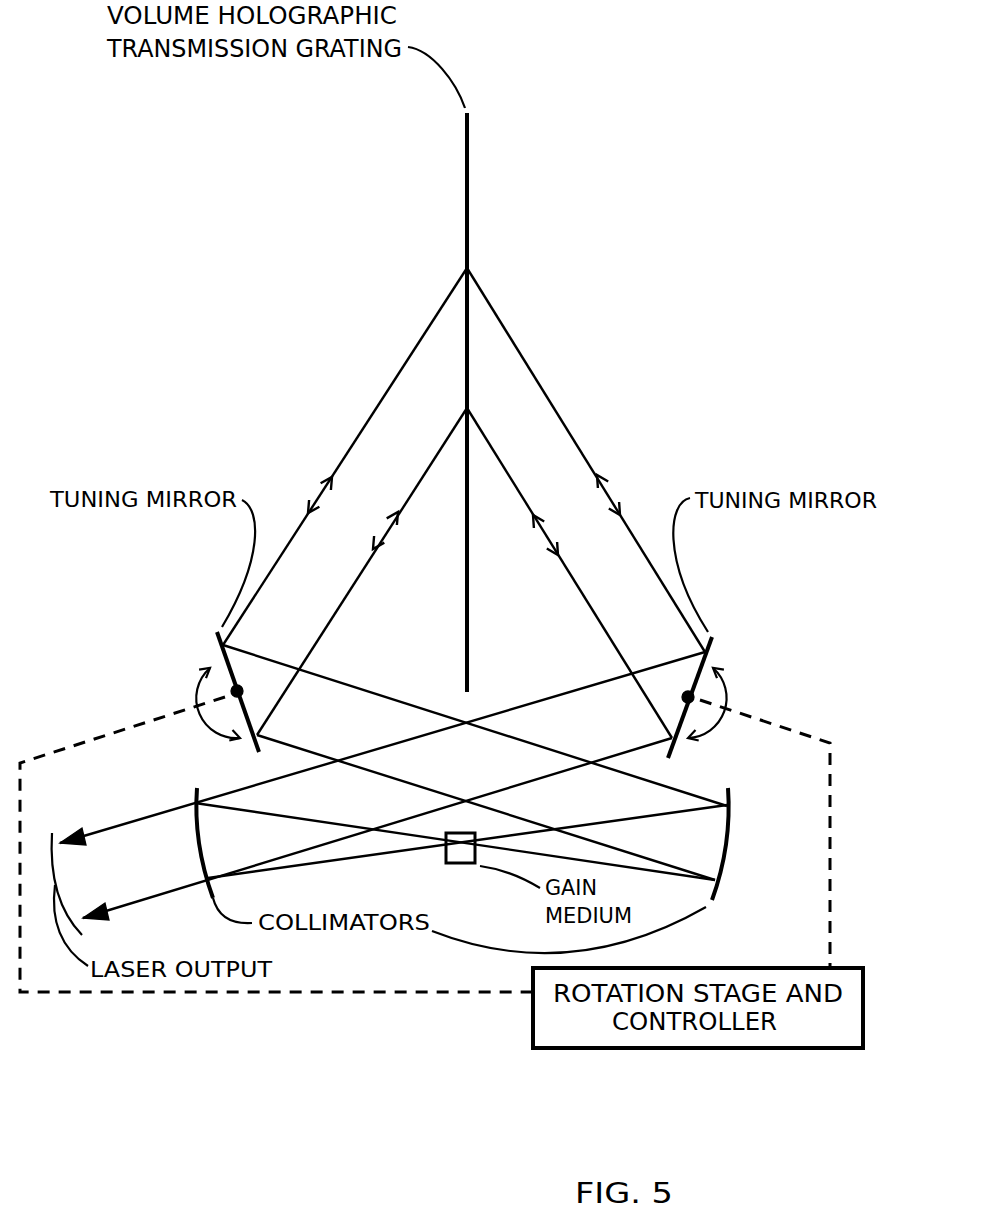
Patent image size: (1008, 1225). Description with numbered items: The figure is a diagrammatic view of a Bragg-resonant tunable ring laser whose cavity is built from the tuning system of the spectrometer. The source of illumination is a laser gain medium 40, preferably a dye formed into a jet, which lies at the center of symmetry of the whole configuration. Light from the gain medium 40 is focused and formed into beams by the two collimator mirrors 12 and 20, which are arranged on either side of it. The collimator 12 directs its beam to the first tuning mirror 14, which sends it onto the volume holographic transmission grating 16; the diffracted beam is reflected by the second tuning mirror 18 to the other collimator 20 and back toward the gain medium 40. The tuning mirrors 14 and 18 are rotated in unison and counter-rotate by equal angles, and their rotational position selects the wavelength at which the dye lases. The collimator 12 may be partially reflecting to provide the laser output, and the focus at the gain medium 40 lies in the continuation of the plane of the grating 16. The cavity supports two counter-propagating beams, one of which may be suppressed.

The collimator mirror 12 is at (193, 788).
The first tuning mirror 14 is at (212, 631).
The volume holographic transmission grating 16 is at (476, 143).
The second tuning mirror 18 is at (712, 634).
The collimator mirror 20 is at (726, 788).
The laser gain medium 40 is at (451, 868).